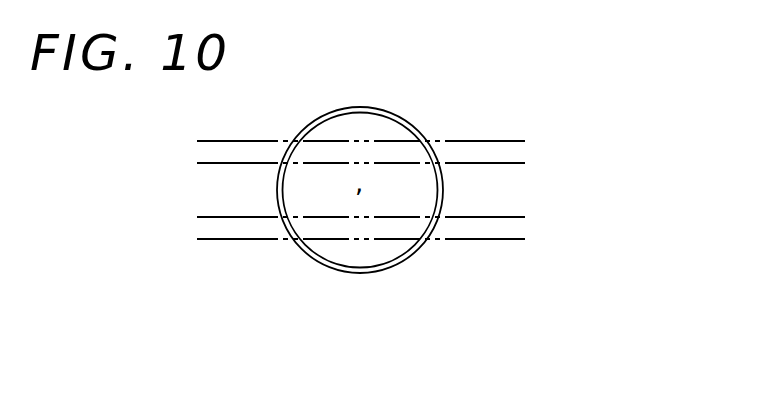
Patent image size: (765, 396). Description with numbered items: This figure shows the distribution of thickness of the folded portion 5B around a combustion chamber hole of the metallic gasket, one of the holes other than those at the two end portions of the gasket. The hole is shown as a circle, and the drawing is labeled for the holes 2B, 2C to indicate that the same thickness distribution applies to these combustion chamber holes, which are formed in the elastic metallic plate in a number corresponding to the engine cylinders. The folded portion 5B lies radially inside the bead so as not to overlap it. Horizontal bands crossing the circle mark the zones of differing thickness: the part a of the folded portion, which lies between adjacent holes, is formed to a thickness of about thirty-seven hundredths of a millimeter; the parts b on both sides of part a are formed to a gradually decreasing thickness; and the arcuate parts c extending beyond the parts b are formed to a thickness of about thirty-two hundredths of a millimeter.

The folded portion 5B is at (407, 121).
The hole for combustion chamber 2B is at (344, 196).
The hole for combustion chamber 2C is at (412, 196).
The part between the holes a is at (248, 163).
The parts of gradually decreasing thickness b is at (217, 123).
The arcuate part c is at (458, 141).